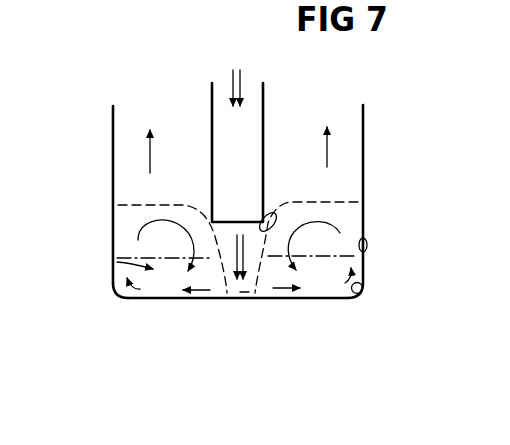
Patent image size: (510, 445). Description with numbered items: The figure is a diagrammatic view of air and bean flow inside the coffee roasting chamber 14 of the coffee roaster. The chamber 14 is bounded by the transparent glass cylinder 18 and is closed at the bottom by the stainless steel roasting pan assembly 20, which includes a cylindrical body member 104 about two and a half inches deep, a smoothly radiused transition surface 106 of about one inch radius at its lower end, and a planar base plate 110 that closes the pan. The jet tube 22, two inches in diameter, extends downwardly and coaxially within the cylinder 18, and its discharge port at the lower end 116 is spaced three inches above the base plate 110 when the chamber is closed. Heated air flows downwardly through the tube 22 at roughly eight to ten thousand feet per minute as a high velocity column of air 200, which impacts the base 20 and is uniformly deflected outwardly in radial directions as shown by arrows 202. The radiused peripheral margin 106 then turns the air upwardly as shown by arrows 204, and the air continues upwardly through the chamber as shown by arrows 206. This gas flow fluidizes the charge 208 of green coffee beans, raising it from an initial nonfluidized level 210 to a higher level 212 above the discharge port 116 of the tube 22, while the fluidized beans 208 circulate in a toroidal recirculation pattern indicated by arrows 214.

The coffee roasting chamber 14 is at (108, 130).
The transparent glass cylinder 18 is at (366, 120).
The stainless steel roasting pan assembly 20 is at (110, 290).
The tube 22 is at (266, 100).
The cylindrical body member 104 is at (368, 233).
The transition surface 106 is at (363, 291).
The planar base plate 110 is at (310, 298).
The lower end of jet tube 116 is at (277, 217).
The downward high velocity column of air 200 is at (238, 247).
The radially deflected air flow 202 is at (200, 292).
The upwardly deflected air flow 204 is at (140, 290).
The upward air flow through chamber 206 is at (152, 160).
The charge of green coffee beans 208 is at (117, 263).
The initial nonfluidized level 210 is at (132, 255).
The fluidized level 212 is at (140, 205).
The toroidal recirculation pattern 214 is at (292, 257).